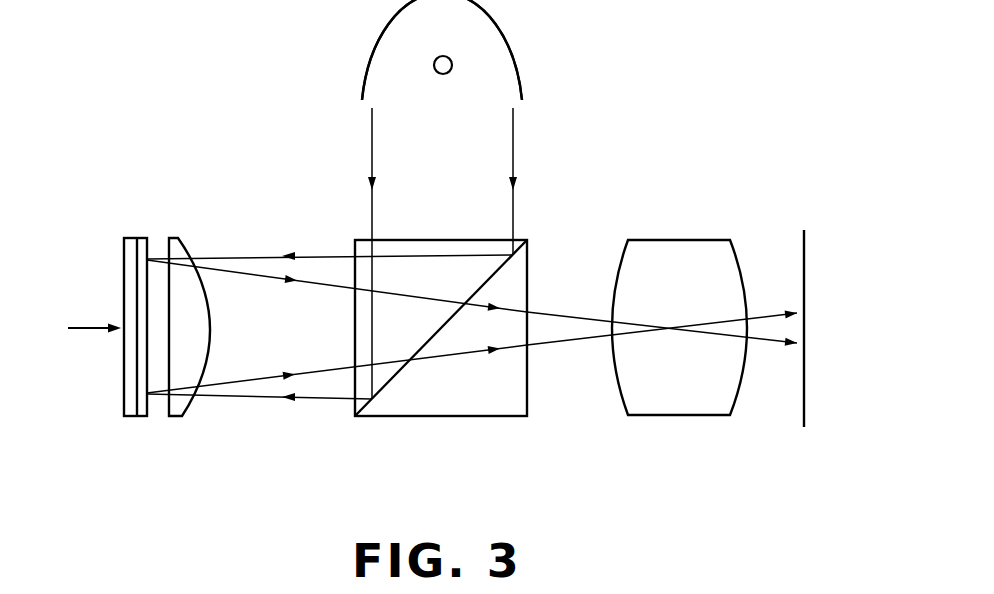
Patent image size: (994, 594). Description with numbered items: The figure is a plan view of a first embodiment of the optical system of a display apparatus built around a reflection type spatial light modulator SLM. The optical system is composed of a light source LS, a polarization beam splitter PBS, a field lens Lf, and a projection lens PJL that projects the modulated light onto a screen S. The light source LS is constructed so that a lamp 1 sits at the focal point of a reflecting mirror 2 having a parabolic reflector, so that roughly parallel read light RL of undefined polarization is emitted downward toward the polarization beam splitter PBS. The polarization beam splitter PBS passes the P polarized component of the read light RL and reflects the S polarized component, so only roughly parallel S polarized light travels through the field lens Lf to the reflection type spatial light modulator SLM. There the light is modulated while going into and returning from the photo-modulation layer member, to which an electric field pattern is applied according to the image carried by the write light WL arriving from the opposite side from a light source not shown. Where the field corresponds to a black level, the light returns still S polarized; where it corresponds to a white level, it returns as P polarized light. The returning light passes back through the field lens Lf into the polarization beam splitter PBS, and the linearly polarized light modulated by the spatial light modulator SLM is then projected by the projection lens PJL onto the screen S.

The lamp 1 is at (443, 74).
The reflecting mirror 2 is at (383, 34).
The light source LS is at (513, 33).
The read light RL is at (496, 206).
The write light WL is at (89, 310).
The reflection type spatial light modulator SLM is at (140, 434).
The field lens Lf is at (178, 247).
The polarization beam splitter PBS is at (446, 430).
The projection lens PJL is at (672, 430).
The screen S is at (806, 255).